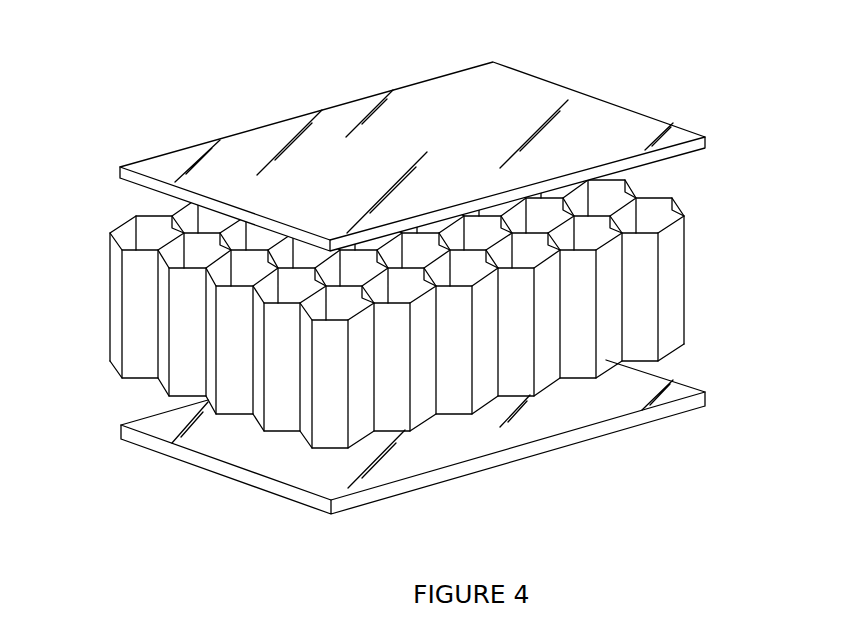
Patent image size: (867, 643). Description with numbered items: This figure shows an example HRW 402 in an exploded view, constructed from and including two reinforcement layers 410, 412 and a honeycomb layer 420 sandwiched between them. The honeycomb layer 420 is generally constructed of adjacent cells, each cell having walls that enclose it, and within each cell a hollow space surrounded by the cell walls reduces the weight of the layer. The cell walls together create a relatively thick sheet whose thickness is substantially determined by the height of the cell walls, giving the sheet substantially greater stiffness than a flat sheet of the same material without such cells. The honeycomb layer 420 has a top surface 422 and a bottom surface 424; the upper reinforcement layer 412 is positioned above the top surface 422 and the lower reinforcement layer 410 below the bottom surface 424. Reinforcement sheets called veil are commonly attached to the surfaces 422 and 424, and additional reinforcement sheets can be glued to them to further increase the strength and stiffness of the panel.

The HRW 402 is at (242, 82).
The reinforcement layer 410 is at (543, 425).
The reinforcement layer 412 is at (613, 130).
The honeycomb layer 420 is at (398, 288).
The top surface 422 is at (173, 218).
The bottom surface 424 is at (140, 378).